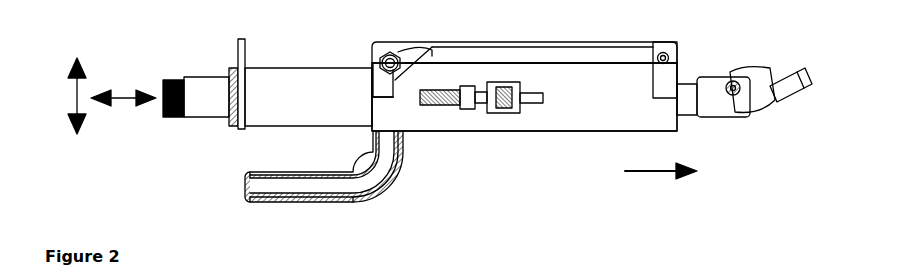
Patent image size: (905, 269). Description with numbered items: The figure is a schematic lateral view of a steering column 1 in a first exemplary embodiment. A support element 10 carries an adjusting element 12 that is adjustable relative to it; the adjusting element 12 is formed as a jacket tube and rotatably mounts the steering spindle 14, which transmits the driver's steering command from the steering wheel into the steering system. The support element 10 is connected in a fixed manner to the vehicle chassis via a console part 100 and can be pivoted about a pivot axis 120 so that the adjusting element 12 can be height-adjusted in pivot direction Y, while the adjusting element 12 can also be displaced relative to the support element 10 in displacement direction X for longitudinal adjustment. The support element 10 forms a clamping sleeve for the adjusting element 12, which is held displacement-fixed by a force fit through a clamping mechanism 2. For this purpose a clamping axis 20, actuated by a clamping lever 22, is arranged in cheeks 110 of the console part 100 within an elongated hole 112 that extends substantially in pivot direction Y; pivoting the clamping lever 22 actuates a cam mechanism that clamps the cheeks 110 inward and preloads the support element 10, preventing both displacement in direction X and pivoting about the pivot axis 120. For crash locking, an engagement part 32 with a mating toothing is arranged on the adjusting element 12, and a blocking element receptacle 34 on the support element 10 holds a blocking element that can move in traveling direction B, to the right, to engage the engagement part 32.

The steering column 1 is at (702, 29).
The clamping mechanism 2 is at (440, 141).
The support element 10 is at (590, 124).
The adjusting element 12 is at (318, 84).
The steering spindle 14 is at (214, 88).
The clamping axis 20 is at (391, 52).
The clamping lever 22 is at (316, 192).
The engagement part 32 is at (469, 91).
The blocking element receptacle 34 is at (510, 113).
The console part 100 is at (593, 47).
The cheeks 110 is at (416, 57).
The elongated hole 112 is at (395, 82).
The pivot axis 120 is at (660, 44).
The traveling direction B is at (657, 176).
The displacement direction X is at (123, 99).
The pivot direction Y is at (80, 90).